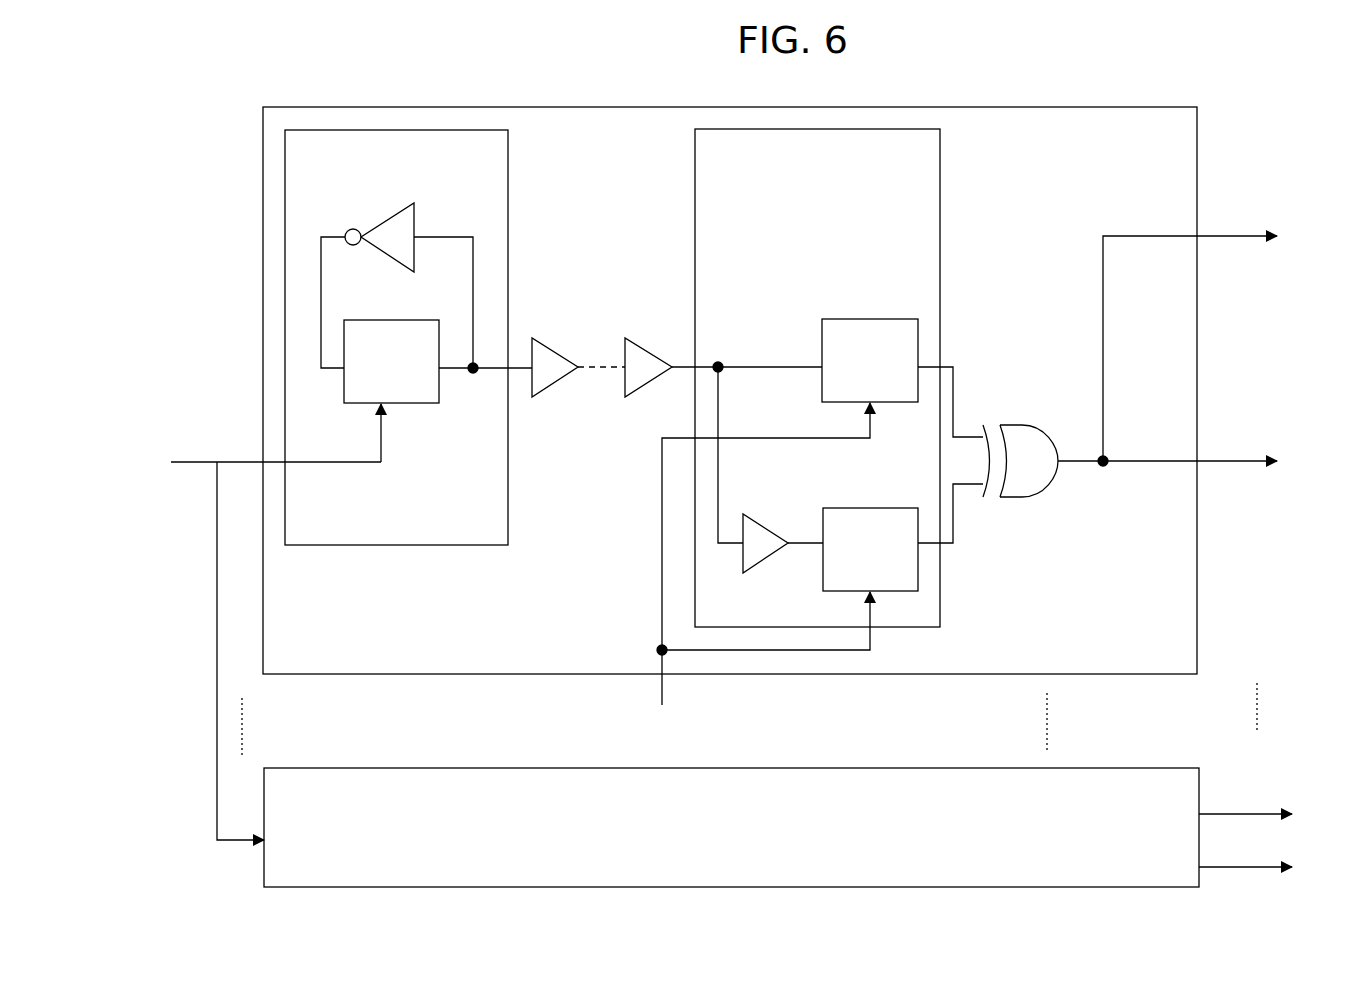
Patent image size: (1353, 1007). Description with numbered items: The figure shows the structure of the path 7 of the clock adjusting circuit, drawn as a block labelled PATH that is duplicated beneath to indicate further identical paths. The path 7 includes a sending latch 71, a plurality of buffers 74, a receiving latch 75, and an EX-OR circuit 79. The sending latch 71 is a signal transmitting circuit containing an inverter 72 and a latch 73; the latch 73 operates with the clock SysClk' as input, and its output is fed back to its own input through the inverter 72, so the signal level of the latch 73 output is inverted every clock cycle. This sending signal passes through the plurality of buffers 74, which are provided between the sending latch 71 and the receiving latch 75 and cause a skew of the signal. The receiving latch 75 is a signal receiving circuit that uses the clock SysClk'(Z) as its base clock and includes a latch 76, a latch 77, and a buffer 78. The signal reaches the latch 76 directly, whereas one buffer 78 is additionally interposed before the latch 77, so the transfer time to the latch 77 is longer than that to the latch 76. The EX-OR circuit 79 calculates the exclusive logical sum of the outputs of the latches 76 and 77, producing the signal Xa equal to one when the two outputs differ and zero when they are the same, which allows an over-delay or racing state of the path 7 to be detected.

The path 7 is at (712, 474).
The sending latch 71 is at (437, 337).
The inverter 72 is at (412, 274).
The latch 73 is at (403, 367).
The buffers 74 is at (608, 341).
The receiving latch 75 is at (863, 378).
The latch 76 is at (870, 333).
The latch 77 is at (870, 521).
The buffer 78 is at (777, 515).
The EX-OR circuit 79 is at (1013, 482).